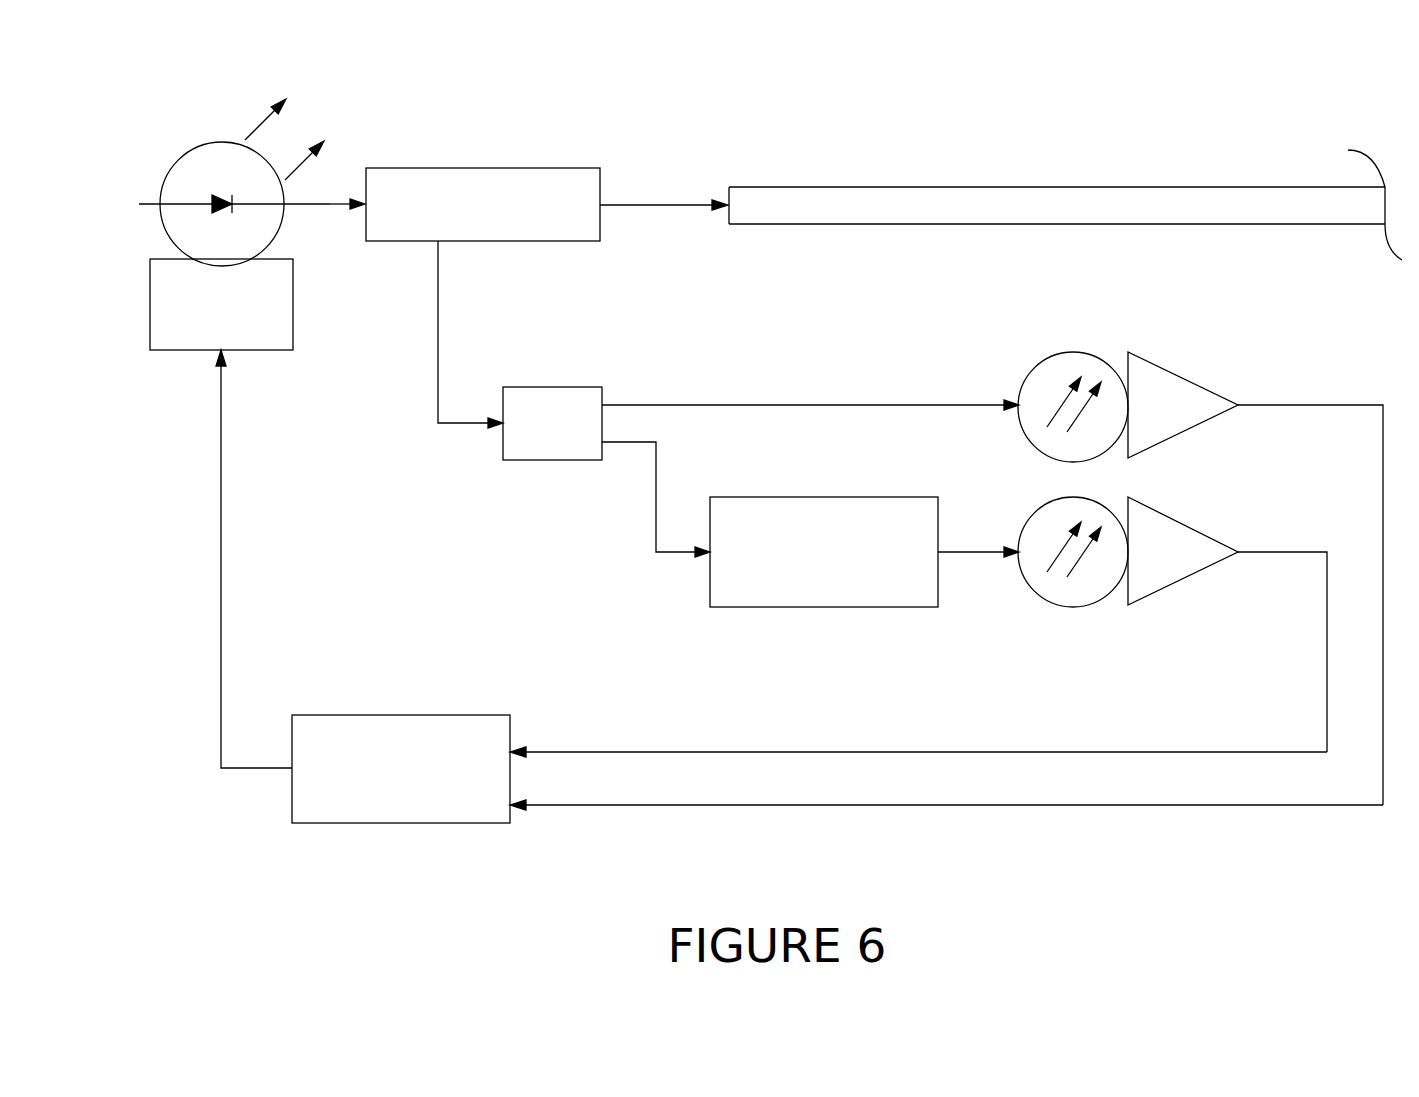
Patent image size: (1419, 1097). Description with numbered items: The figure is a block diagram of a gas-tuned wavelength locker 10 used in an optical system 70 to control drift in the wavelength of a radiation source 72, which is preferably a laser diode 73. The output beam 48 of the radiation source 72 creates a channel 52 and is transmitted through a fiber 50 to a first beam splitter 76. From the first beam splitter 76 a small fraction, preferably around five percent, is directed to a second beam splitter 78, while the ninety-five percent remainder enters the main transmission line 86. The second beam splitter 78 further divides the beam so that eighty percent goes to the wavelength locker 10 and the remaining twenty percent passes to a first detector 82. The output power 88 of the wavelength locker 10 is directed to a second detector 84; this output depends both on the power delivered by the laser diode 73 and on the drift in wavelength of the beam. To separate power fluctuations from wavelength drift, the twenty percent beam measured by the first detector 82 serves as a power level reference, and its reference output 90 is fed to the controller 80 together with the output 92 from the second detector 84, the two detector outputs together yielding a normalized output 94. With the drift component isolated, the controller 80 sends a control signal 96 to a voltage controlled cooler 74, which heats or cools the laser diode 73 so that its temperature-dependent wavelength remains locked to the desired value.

The gas-tuned wavelength locker 10 is at (840, 564).
The output beam 48 is at (307, 207).
The fiber 50 is at (330, 206).
The channel 52 is at (331, 175).
The optical system 70 is at (215, 110).
The radiation source 72 is at (203, 167).
The laser diode 73 is at (222, 204).
The voltage controlled cooler 74 is at (150, 295).
The first beam splitter 76 is at (428, 168).
The second beam splitter 78 is at (547, 452).
The controller 80 is at (402, 715).
The first detector 82 is at (1047, 370).
The second detector 84 is at (1083, 590).
The main transmission line 86 is at (1038, 205).
The output power 88 is at (983, 550).
The reference output 90 is at (1310, 405).
The output 92 is at (1310, 552).
The normalized output 94 is at (735, 730).
The control signal 96 is at (222, 652).